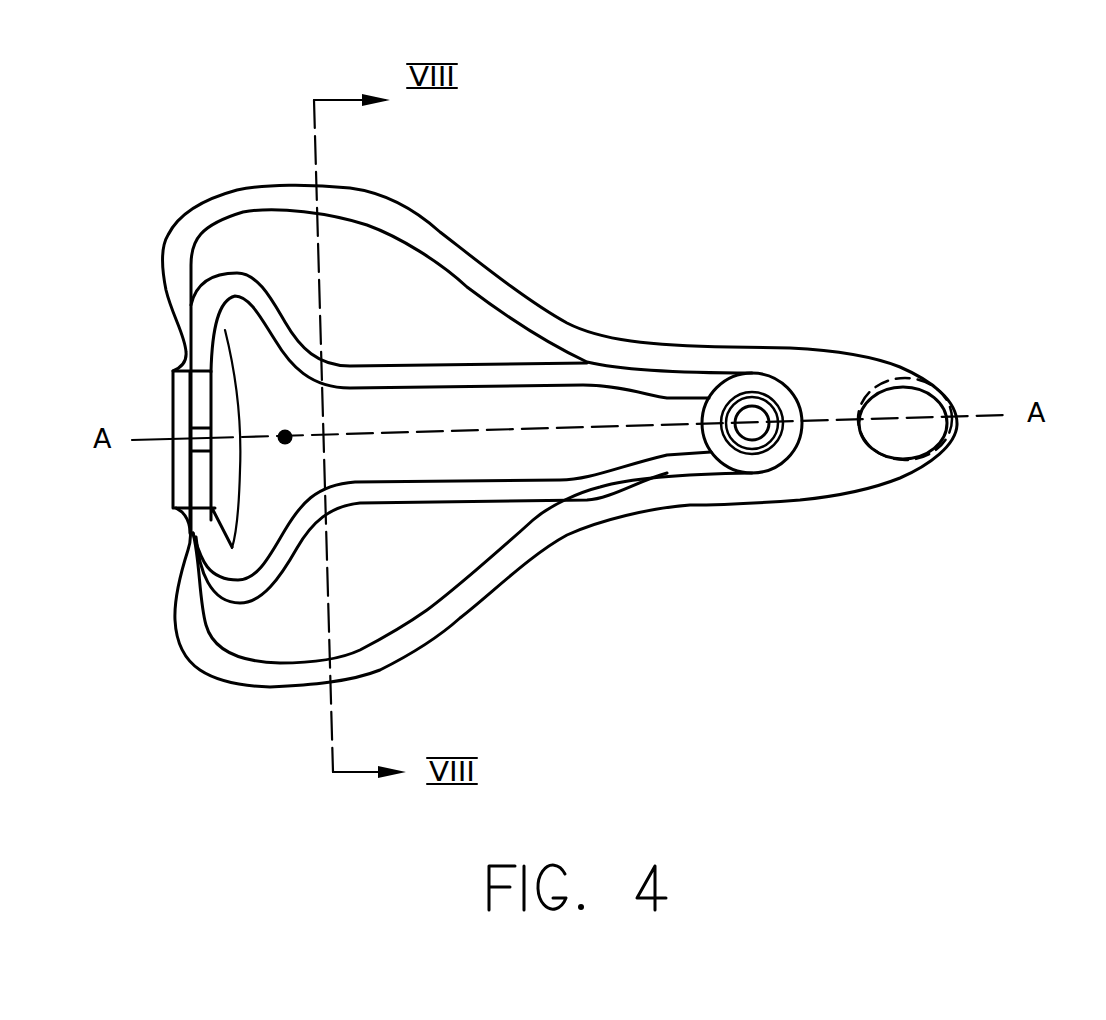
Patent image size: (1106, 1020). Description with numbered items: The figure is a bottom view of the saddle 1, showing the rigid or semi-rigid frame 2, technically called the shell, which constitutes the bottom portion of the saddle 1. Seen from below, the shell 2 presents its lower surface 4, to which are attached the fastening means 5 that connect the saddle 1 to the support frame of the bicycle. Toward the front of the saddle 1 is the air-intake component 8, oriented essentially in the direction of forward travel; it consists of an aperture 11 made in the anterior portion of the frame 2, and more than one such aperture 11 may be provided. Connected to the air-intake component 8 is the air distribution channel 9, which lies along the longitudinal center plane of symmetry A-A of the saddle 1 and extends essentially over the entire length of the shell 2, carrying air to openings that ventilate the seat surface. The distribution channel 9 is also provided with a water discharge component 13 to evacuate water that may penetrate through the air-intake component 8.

The saddle 1 is at (758, 296).
The frame 2 is at (417, 640).
The lower surface 4 is at (402, 582).
The fastening means 5 is at (423, 493).
The air-intake component 8 is at (922, 322).
The air distribution channel 9 is at (573, 458).
The aperture 11 is at (920, 430).
The water discharge component 13 is at (282, 447).